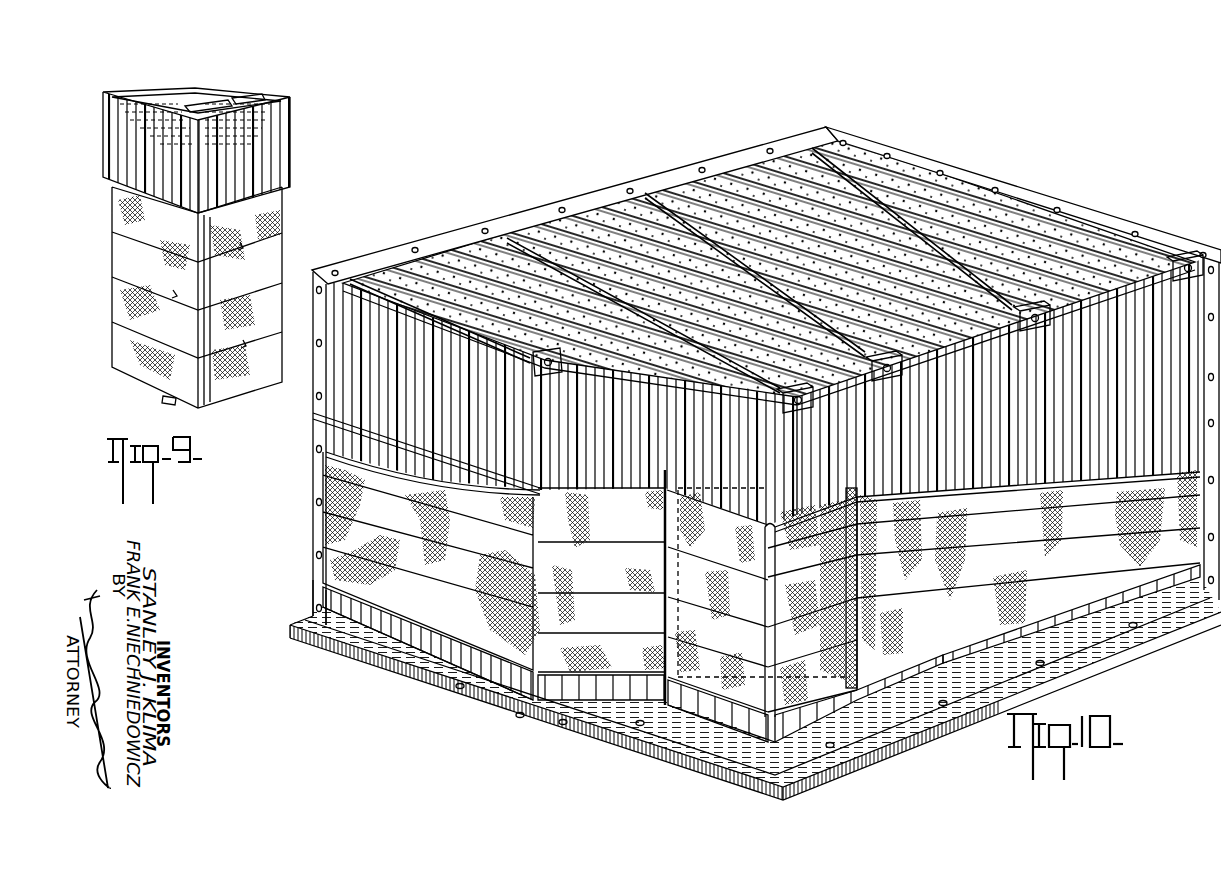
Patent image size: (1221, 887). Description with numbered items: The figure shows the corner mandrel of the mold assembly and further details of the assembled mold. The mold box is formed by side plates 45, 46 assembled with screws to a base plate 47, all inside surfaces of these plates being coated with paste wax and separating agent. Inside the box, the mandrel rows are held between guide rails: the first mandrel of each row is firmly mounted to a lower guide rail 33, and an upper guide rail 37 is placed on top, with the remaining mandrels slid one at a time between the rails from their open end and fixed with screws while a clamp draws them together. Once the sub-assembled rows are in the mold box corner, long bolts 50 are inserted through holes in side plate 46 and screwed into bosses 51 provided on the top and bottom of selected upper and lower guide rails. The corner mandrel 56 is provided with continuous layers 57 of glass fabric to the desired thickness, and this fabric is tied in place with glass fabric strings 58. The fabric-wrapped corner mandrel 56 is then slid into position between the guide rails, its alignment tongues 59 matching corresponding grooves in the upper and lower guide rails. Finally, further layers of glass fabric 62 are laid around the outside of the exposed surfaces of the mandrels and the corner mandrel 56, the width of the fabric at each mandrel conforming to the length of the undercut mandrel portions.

In FIG. 10, the lower guide rail 33 is at (316, 596).
In FIG. 10, the upper guide rail 37 is at (387, 283).
In FIG. 10, the side plate 45 is at (1037, 197).
In FIG. 10, the side plate 46 is at (533, 220).
In FIG. 10, the base plate 47 is at (1168, 625).
In FIG. 10, the long bolts 50 is at (457, 277).
In FIG. 10, the bosses 51 is at (1183, 252).
In FIG. 9, the corner mandrel 56 is at (310, 129).
In FIG. 10, the corner mandrel 56 is at (667, 503).
In FIG. 9, the continuous layers of glass fabric 57 is at (283, 250).
In FIG. 10, the continuous layers of glass fabric 57 is at (830, 683).
In FIG. 9, the glass fabric strings 58 is at (170, 293).
In FIG. 9, the alignment tongues 59 is at (237, 92).
In FIG. 10, the layers of glass fabric 62 is at (937, 627).